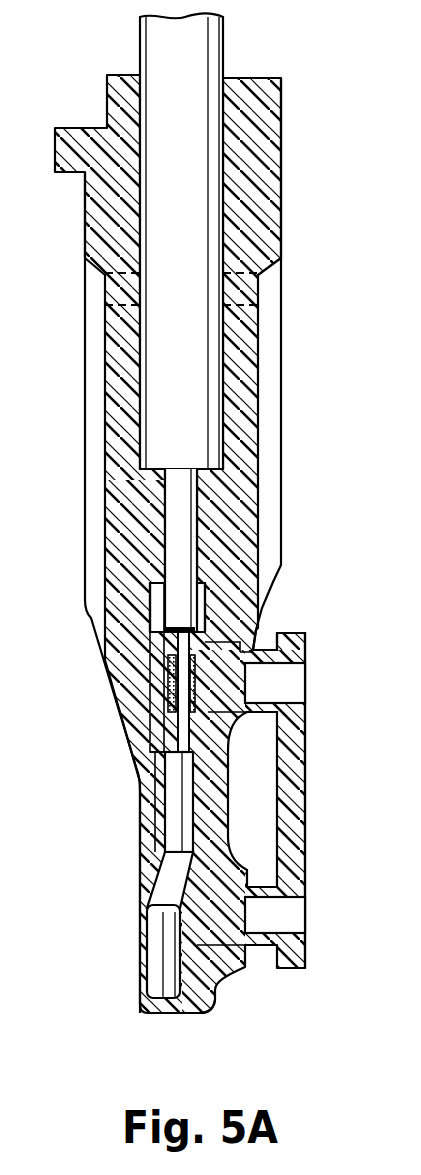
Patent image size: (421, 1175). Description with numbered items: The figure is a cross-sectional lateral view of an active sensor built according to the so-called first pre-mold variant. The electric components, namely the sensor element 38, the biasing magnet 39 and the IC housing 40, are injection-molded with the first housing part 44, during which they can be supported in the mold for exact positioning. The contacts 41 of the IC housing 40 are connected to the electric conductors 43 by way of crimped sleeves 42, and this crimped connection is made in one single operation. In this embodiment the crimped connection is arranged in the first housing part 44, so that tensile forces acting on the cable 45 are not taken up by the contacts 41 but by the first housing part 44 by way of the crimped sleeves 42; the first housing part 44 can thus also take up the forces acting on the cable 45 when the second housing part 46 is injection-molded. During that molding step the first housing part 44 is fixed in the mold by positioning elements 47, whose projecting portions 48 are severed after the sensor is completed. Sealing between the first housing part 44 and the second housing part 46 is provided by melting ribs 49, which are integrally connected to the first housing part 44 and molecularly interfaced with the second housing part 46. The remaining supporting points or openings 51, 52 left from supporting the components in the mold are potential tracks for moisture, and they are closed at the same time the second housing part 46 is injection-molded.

The sensor element 38 is at (157, 960).
The biasing magnet 39 is at (207, 1001).
The IC housing 40 is at (175, 808).
The contacts 41 is at (180, 661).
The crimped sleeves 42 is at (168, 690).
The electric conductors 43 is at (155, 628).
The first housing part 44 is at (170, 905).
The cable 45 is at (200, 48).
The second housing part 46 is at (243, 399).
The positioning elements 47 is at (263, 667).
The projecting portions 48 is at (290, 773).
The melting ribs 49 is at (227, 642).
The opening 51 is at (158, 770).
The opening 52 is at (150, 850).